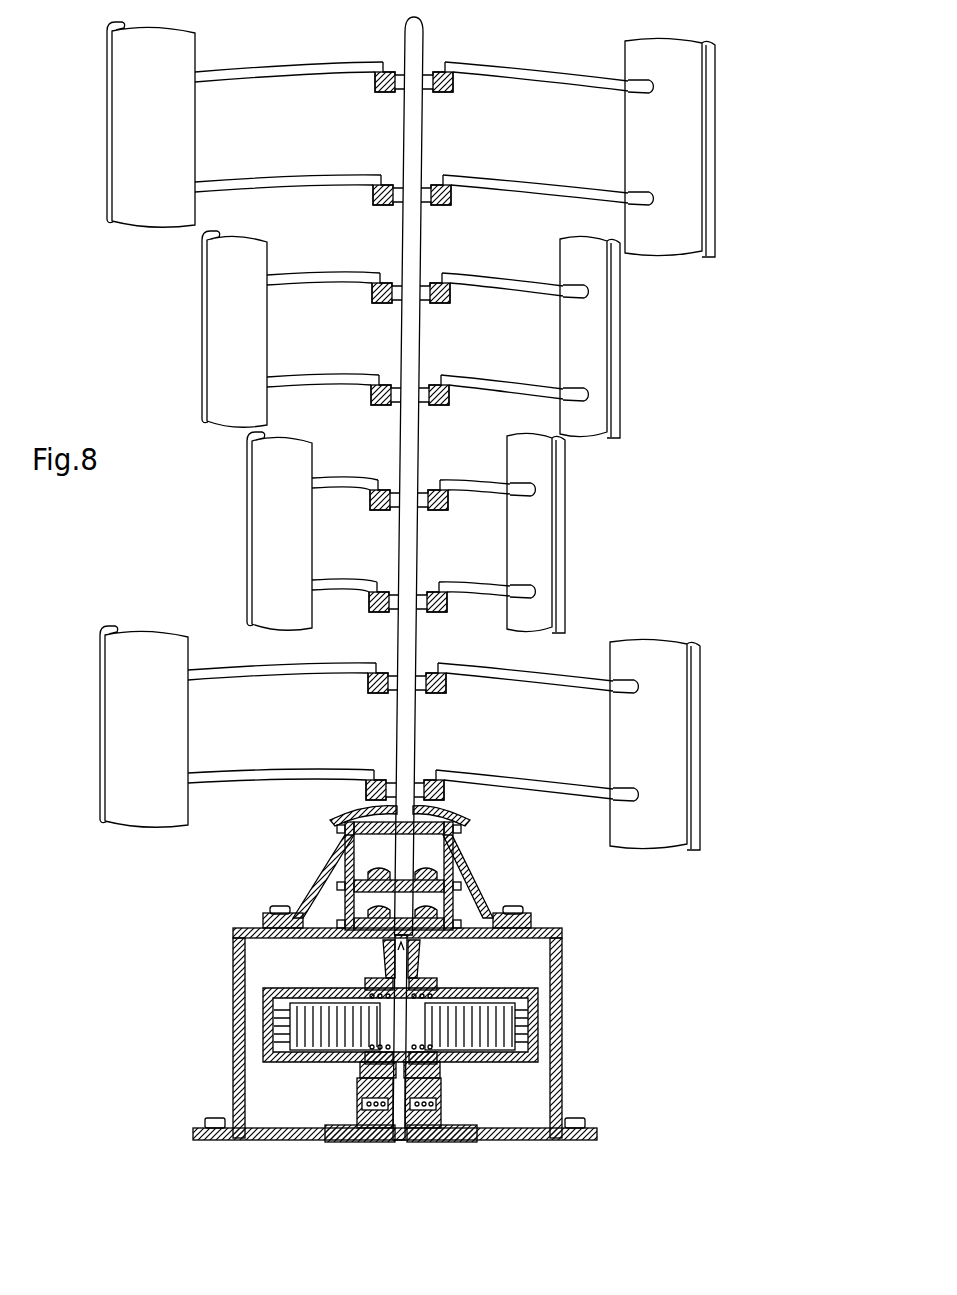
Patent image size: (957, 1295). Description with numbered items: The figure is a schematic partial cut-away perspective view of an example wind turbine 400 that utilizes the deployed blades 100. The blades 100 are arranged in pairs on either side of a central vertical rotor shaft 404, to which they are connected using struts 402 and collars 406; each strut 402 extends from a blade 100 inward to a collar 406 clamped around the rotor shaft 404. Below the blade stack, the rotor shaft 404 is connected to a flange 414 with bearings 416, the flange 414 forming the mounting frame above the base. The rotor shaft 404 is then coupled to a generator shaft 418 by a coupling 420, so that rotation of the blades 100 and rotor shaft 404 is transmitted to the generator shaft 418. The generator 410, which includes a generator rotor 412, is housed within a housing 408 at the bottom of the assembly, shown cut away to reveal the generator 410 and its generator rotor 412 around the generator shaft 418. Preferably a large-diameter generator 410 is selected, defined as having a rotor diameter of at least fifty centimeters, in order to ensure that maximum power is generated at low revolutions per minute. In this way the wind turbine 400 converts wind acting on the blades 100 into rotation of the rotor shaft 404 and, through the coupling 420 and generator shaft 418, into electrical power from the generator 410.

The wind turbine 400 is at (751, 94).
The struts 402 is at (558, 289).
The blades 100 is at (615, 385).
The rotor shaft 404 is at (409, 447).
The collars 406 is at (440, 610).
The bearings 416 is at (427, 868).
The flange 414 is at (493, 907).
The coupling 420 is at (397, 970).
The housing 408 is at (557, 997).
The generator shaft 418 is at (397, 1080).
The generator 410 is at (542, 1058).
The generator rotor 412 is at (497, 1050).